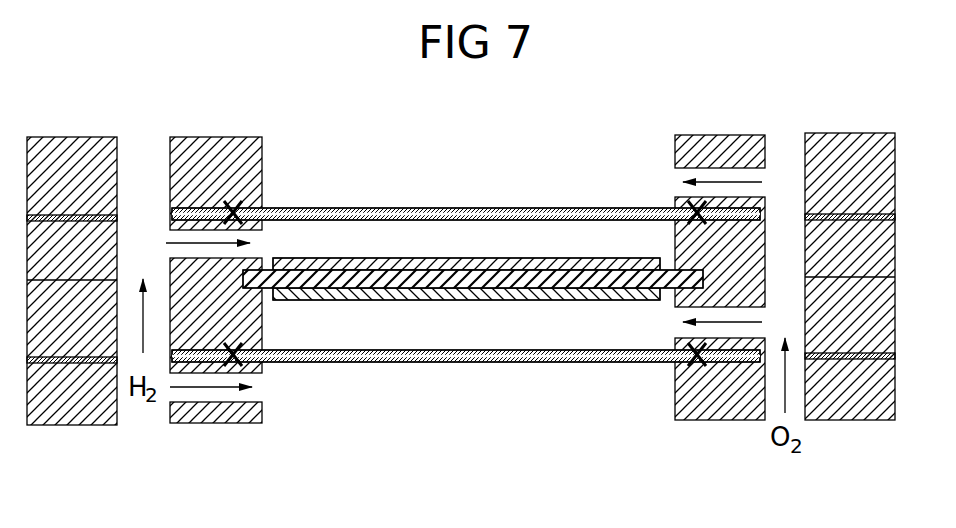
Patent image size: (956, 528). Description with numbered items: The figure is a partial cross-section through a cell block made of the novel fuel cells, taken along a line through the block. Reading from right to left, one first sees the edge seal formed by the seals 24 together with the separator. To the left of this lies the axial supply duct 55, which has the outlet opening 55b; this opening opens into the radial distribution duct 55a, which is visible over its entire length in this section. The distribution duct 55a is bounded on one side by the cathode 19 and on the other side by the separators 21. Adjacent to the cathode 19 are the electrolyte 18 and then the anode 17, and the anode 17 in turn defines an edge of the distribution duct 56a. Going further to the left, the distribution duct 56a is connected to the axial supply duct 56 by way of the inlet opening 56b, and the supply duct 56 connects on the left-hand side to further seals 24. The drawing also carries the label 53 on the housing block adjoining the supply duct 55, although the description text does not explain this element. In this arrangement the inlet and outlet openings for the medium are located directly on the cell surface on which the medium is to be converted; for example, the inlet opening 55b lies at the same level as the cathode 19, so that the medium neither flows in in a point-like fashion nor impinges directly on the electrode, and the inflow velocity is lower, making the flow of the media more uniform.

The anode 17 is at (304, 263).
The electrolyte 18 is at (596, 300).
The cathode 19 is at (594, 301).
The separators 21 is at (487, 206).
The seals 24 is at (845, 150).
The oxygen side housing block 53 is at (696, 210).
The axial supply duct 55 is at (800, 174).
The radial distribution duct 55a is at (433, 339).
The outlet opening 55b is at (733, 323).
The axial supply duct 56 is at (140, 425).
The distribution duct 56a is at (433, 252).
The inlet opening 56b is at (168, 243).